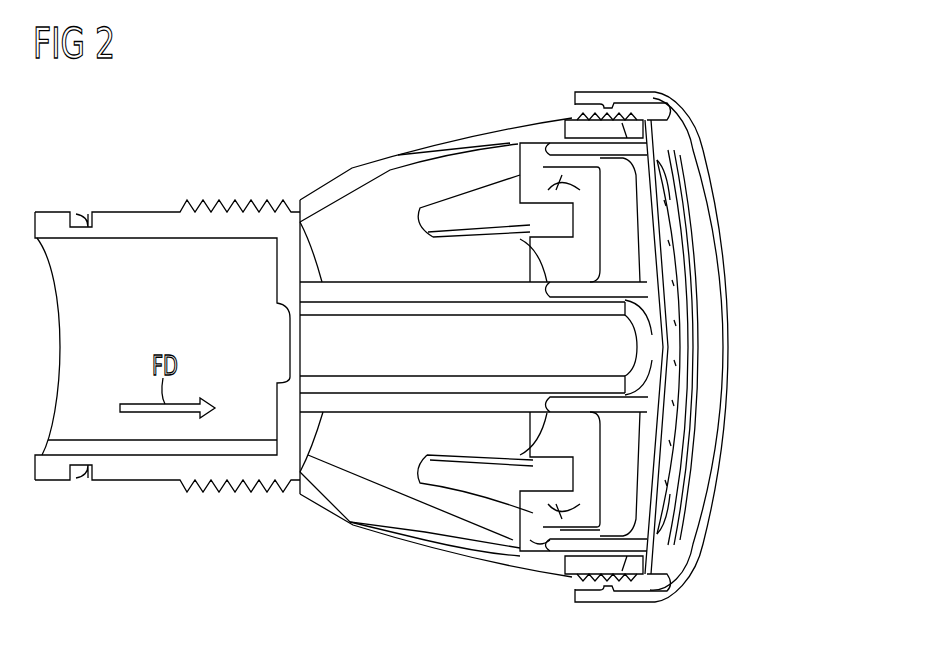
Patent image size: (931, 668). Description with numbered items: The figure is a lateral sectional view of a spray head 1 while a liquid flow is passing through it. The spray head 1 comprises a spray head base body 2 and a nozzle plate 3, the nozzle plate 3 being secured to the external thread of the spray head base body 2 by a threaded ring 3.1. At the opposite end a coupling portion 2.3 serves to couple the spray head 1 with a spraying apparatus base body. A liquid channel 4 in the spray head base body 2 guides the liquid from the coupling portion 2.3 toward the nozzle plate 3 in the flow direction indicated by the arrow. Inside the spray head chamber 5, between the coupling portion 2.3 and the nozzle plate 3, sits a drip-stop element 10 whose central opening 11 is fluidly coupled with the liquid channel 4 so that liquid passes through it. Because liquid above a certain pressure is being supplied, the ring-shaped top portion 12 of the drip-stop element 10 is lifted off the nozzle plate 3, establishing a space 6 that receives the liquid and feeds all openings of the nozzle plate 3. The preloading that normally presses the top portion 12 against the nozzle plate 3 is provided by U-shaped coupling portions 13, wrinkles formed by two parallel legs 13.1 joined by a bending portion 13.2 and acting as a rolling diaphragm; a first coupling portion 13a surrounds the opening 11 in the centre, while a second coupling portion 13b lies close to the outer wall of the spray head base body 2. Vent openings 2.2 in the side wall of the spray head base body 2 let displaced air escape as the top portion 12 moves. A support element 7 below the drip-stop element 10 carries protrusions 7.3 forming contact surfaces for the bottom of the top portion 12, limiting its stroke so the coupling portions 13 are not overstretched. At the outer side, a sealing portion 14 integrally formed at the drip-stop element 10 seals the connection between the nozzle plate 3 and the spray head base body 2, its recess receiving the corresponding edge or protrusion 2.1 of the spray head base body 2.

The spray head 1 is at (702, 103).
The spray head base body 2 is at (406, 148).
The edge or protrusion 2.1 is at (600, 92).
The vent openings 2.2 is at (353, 165).
The coupling portion 2.3 is at (148, 226).
The nozzle plate 3 is at (675, 370).
The threaded ring 3.1 is at (627, 93).
The liquid channel 4 is at (168, 314).
The spray head chamber 5 is at (358, 249).
The space 6 is at (662, 284).
The support element 7 is at (603, 212).
The protrusions 7.3 is at (590, 481).
The drip-stop element 10 is at (598, 448).
The opening 11 is at (630, 342).
The top portion 12 is at (628, 240).
The coupling portions 13 is at (543, 272).
The first coupling portion 13a is at (540, 414).
The second coupling portion 13b is at (546, 138).
The legs 13.1 is at (568, 553).
The bending portion 13.2 is at (547, 550).
The sealing portion 14 is at (652, 133).